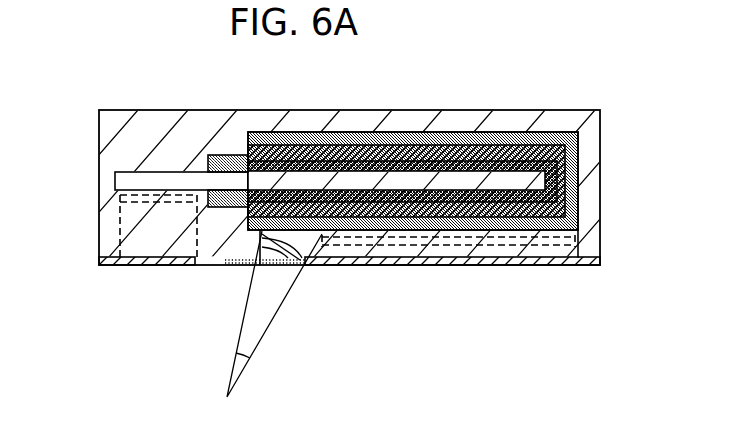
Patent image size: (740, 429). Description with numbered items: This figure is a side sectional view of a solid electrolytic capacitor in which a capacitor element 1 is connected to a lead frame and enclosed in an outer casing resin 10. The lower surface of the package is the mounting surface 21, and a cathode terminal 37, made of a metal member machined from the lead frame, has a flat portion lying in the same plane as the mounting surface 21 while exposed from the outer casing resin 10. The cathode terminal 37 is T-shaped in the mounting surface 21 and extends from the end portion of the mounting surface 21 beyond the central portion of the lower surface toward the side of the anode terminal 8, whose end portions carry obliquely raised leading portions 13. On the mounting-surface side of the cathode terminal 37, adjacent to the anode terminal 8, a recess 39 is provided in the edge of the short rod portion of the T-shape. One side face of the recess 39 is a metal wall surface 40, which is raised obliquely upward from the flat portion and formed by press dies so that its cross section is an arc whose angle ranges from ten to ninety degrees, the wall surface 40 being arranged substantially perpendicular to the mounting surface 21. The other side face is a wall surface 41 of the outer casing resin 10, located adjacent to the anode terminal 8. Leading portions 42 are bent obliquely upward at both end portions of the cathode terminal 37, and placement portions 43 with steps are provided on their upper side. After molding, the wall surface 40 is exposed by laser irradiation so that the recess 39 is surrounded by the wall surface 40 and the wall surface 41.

The capacitor element 1 is at (349, 167).
The anode terminal 8 is at (128, 270).
The outer casing resin 10 is at (120, 148).
The leading portions 13 is at (158, 233).
The mounting surface 21 is at (227, 268).
The cathode terminal 37 is at (450, 270).
The recess 39 is at (370, 136).
The wall surface 40 is at (250, 183).
The wall surface 41 is at (326, 150).
The leading portions 42 is at (568, 252).
The placement portions 43 is at (572, 236).